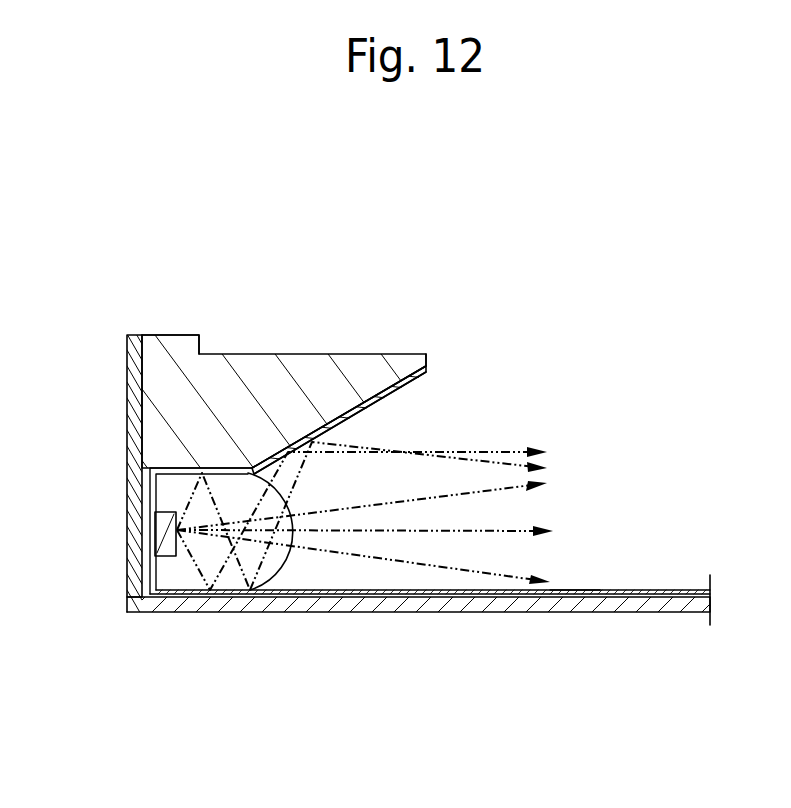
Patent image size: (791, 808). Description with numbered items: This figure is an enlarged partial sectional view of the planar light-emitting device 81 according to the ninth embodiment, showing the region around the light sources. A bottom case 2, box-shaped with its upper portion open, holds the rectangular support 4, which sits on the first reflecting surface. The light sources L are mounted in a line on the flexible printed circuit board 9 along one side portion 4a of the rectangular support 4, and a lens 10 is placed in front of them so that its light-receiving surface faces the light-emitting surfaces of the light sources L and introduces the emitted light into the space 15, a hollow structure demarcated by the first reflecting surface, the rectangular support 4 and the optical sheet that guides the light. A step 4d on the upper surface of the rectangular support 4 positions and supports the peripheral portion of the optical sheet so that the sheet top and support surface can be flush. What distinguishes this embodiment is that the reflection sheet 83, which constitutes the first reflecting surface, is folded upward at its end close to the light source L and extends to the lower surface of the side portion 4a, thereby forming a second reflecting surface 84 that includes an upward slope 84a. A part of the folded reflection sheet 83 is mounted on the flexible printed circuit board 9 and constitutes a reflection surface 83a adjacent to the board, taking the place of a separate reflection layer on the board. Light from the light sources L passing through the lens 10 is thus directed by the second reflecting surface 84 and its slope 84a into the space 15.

The planar light-emitting device 81 is at (607, 325).
The bottom case 2 is at (680, 613).
The reflection sheet 83 is at (683, 590).
The reflection surface 83a is at (160, 483).
The space 15 is at (567, 563).
The rectangular support 4 is at (297, 353).
The step 4d is at (202, 349).
The side portion 4a is at (362, 368).
The second reflecting surface 84 is at (432, 398).
The upward slope 84a is at (382, 405).
The flexible printed circuit board 9 is at (150, 533).
The lens 10 is at (252, 588).
The light source L is at (168, 556).